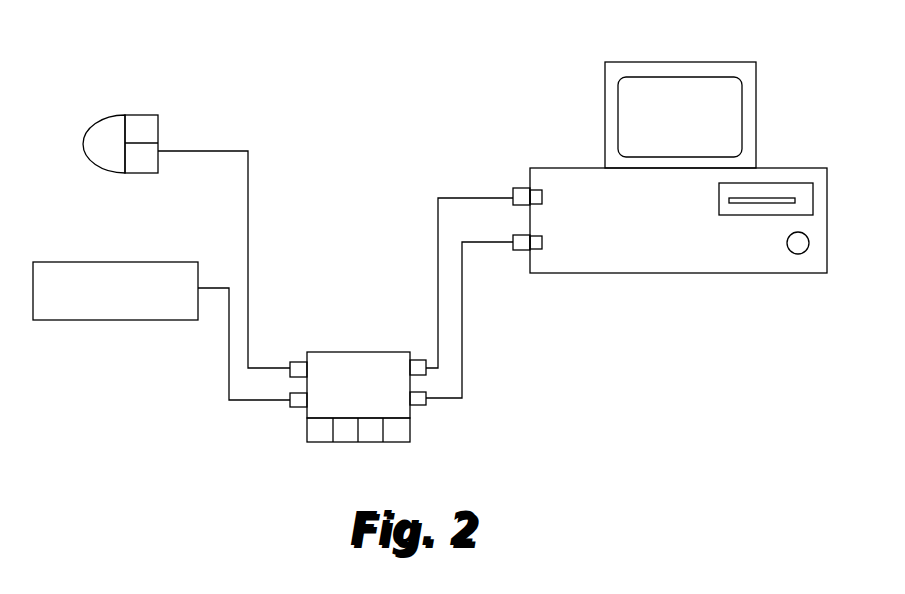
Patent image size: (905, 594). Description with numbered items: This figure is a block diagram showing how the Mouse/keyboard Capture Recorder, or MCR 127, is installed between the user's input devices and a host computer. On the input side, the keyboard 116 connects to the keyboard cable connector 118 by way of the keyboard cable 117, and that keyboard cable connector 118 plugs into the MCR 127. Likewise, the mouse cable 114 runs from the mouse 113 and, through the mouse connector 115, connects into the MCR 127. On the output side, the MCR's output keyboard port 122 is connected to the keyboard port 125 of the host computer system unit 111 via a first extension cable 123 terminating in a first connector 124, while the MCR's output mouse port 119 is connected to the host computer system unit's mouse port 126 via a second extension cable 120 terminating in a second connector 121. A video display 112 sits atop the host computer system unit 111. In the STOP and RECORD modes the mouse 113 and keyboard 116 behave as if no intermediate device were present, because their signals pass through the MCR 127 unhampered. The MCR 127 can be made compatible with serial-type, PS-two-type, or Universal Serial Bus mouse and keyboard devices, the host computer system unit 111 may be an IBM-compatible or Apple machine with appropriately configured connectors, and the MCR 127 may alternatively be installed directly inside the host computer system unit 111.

The host computer system unit 111 is at (782, 168).
The video display 112 is at (676, 62).
The mouse 113 is at (83, 150).
The mouse cable 114 is at (211, 150).
The mouse connector 115 is at (298, 362).
The keyboard 116 is at (115, 262).
The keyboard cable 117 is at (227, 345).
The keyboard cable connector 118 is at (298, 408).
The output mouse port 119 is at (418, 360).
The second extension cable 120 is at (438, 287).
The second connector 121 is at (513, 188).
The output keyboard port 122 is at (421, 405).
The first extension cable 123 is at (462, 308).
The first connector 124 is at (513, 235).
The keyboard port 125 is at (535, 252).
The mouse port 126 is at (535, 188).
The Mouse/keyboard Capture Recorder (MCR) 127 is at (355, 352).